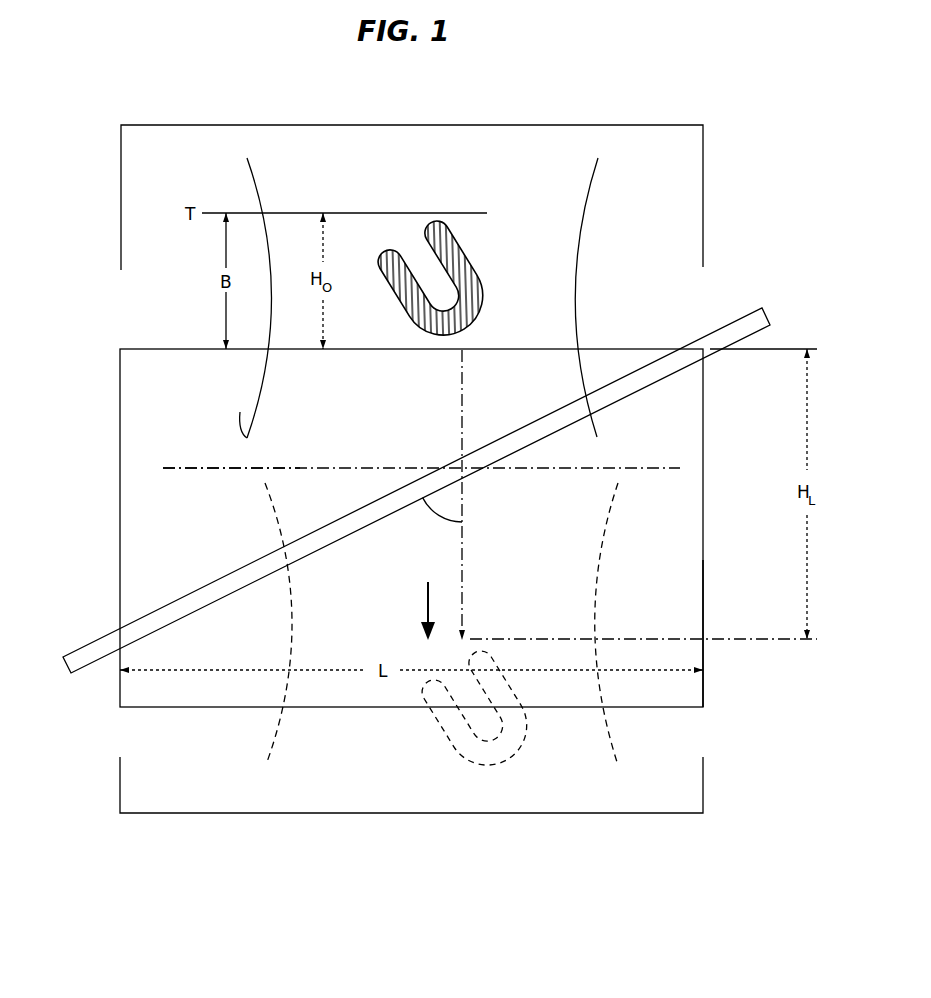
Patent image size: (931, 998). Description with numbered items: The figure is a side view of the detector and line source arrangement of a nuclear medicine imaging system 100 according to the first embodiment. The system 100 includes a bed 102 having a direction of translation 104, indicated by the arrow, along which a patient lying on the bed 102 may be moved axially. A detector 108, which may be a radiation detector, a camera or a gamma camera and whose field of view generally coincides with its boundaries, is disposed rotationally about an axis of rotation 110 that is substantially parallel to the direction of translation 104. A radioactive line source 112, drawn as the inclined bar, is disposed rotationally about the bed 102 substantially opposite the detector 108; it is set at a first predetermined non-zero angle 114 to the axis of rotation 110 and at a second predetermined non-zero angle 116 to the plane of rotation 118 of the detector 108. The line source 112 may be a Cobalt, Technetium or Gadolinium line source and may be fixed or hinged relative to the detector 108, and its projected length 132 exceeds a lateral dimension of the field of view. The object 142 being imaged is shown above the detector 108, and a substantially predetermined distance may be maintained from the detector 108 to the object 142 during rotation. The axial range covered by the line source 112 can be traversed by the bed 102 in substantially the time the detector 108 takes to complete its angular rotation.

The nuclear medicine imaging system 100 is at (165, 855).
The bed 102 is at (682, 170).
The direction of translation 104 is at (428, 601).
The detector 108 is at (128, 413).
The axis of rotation 110 is at (465, 545).
The radioactive line source 112 is at (112, 635).
The first predetermined non-zero angle 114 is at (436, 517).
The second predetermined non-zero angle 116 is at (374, 503).
The plane of rotation 118 is at (190, 468).
The projected length 132 is at (703, 688).
The object 142 is at (477, 263).